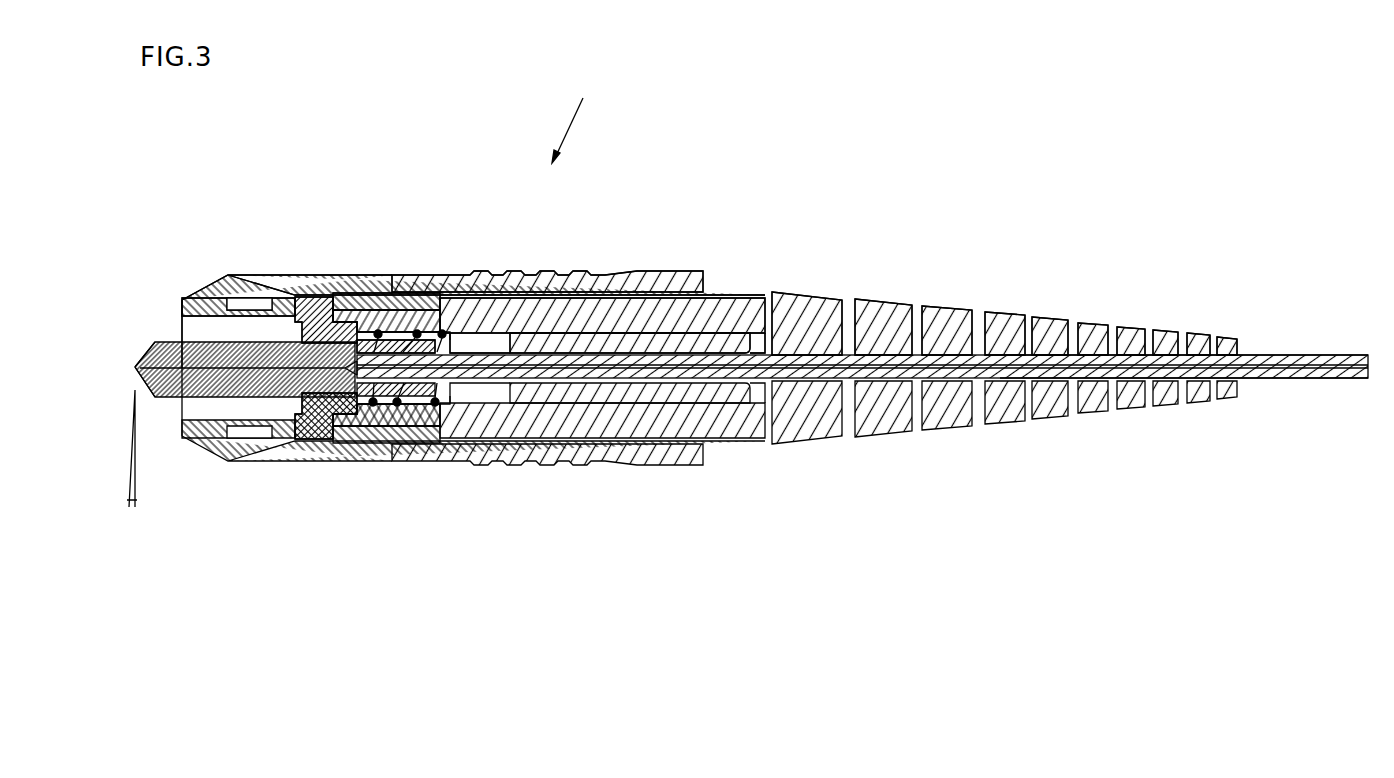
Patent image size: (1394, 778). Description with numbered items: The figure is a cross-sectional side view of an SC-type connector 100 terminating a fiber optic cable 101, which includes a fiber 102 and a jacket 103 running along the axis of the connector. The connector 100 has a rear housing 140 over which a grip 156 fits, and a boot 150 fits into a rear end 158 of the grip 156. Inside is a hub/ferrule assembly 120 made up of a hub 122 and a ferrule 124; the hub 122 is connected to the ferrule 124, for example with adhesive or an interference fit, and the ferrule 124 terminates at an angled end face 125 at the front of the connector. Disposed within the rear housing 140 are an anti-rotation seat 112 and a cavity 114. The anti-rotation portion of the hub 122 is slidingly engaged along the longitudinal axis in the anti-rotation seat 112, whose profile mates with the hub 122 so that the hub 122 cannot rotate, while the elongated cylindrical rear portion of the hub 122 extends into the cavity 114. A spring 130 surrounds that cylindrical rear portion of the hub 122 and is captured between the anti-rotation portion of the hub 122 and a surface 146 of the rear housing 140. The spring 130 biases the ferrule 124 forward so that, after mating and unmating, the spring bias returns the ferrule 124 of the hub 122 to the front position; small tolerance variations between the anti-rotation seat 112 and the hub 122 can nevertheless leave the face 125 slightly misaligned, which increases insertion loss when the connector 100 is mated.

The connector 100 is at (578, 115).
The fiber optic cable 101 is at (1293, 380).
The fiber 102 is at (1265, 366).
The jacket 103 is at (1332, 354).
The anti-rotation seat 112 is at (338, 412).
The cavity 114 is at (387, 330).
The hub/ferrule assembly 120 is at (345, 340).
The hub 122 is at (355, 395).
The ferrule 124 is at (223, 394).
The face 125 is at (135, 366).
The spring 130 is at (418, 333).
The rear housing 140 is at (563, 330).
The surface 146 is at (444, 334).
The boot 150 is at (883, 300).
The grip 156 is at (272, 275).
The rear end 158 is at (705, 280).